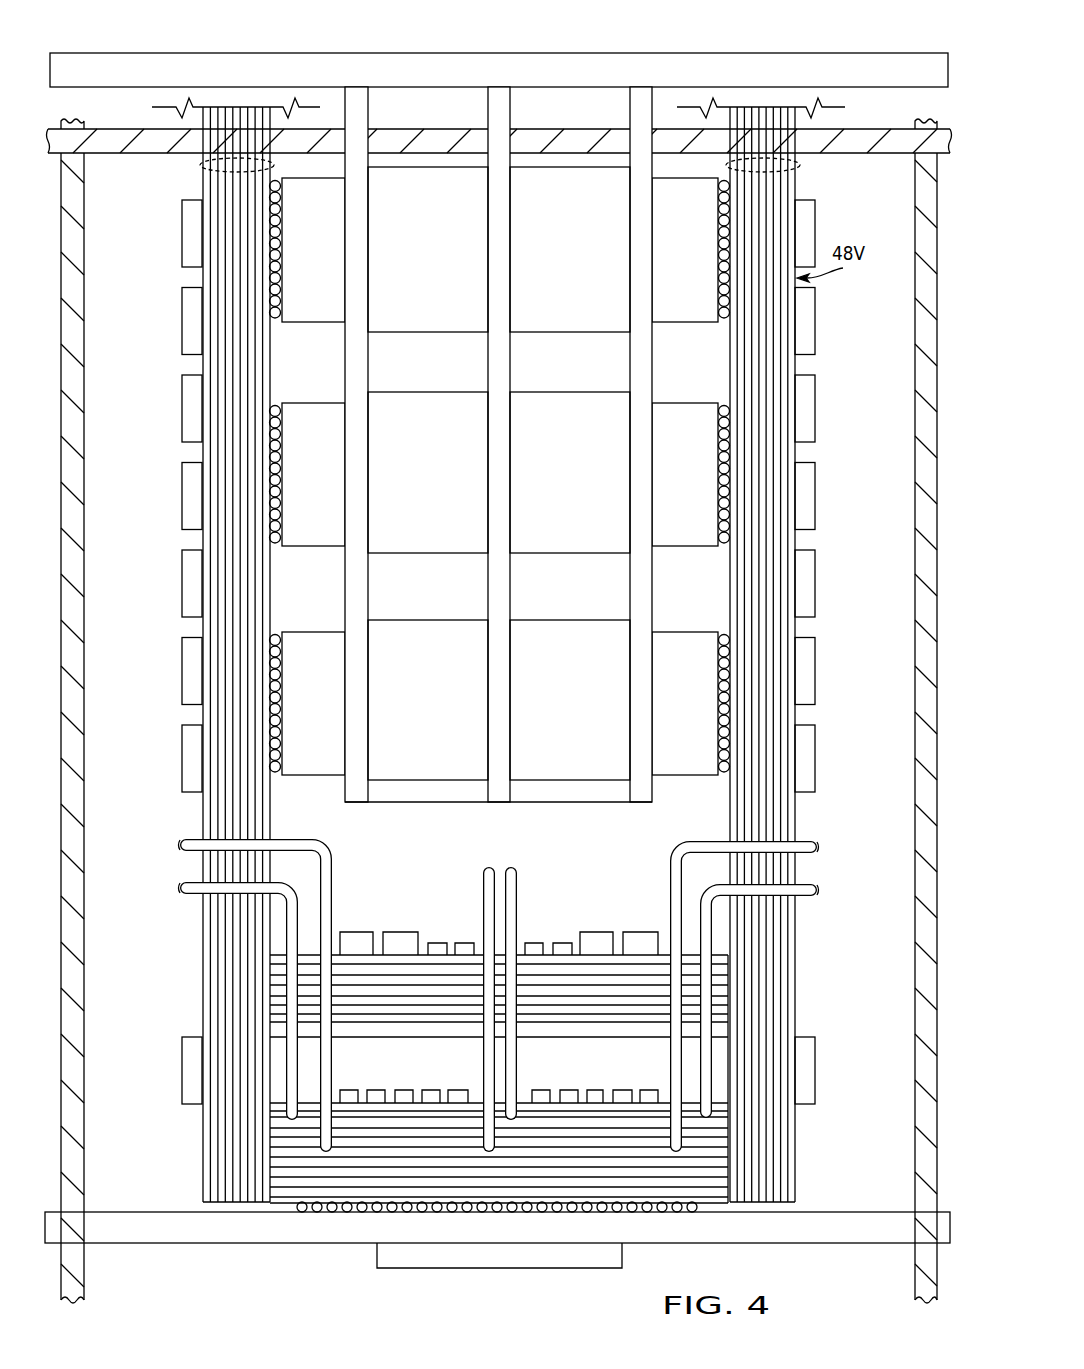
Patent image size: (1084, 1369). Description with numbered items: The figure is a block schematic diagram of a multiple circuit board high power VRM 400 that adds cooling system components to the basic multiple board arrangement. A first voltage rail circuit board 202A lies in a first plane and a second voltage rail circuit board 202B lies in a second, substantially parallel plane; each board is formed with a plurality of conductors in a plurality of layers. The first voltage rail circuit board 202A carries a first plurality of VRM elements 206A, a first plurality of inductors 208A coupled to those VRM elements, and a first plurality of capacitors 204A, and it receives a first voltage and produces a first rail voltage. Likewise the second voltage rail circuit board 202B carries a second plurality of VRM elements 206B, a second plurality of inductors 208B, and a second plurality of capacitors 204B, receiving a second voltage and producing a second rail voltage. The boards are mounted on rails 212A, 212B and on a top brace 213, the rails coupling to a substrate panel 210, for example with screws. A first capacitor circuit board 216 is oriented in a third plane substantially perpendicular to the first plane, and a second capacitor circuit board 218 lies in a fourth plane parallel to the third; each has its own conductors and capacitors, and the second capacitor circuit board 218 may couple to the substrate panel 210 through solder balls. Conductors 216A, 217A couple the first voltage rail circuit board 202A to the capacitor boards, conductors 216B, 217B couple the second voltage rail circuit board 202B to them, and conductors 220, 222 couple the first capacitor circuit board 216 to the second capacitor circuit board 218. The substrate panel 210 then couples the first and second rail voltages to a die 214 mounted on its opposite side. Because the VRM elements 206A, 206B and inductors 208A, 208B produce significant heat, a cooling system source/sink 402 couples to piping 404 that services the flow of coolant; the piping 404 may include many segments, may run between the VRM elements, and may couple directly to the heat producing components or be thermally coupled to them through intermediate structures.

The multiple circuit board high power VRM 400 is at (298, 42).
The cooling system source/sink 402 is at (586, 53).
The top brace 213 is at (858, 137).
The first voltage rail circuit board 202A is at (200, 166).
The second voltage rail circuit board 202B is at (800, 166).
The first plurality of capacitors 204A is at (190, 236).
The second plurality of capacitors 204B is at (808, 228).
The first plurality of VRM elements 206A is at (315, 323).
The second plurality of VRM elements 206B is at (680, 323).
The first plurality of inductors 208A is at (456, 283).
The second plurality of inductors 208B is at (598, 283).
The substrate panel 210 is at (296, 1244).
The rail 212A is at (76, 1268).
The rail 212B is at (920, 1266).
The die 214 is at (505, 1269).
The first capacitor circuit board 216 is at (562, 900).
The fifth plurality of conductors 216A is at (182, 848).
The sixth plurality of conductors 216B is at (816, 850).
The fifth plurality of conductors 217A is at (182, 892).
The sixth plurality of conductors 217B is at (816, 894).
The second capacitor circuit board 218 is at (430, 1084).
The seventh plurality of conductors 220 is at (483, 898).
The seventh plurality of conductors 222 is at (518, 1052).
The piping 404 is at (360, 586).